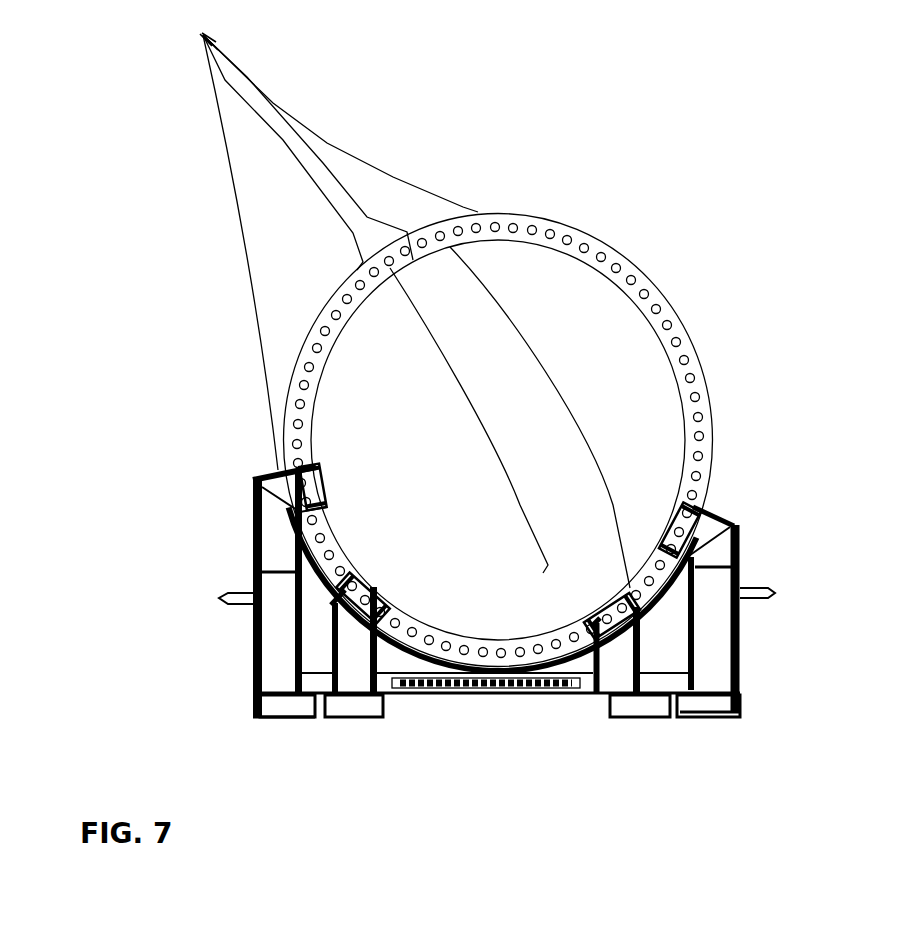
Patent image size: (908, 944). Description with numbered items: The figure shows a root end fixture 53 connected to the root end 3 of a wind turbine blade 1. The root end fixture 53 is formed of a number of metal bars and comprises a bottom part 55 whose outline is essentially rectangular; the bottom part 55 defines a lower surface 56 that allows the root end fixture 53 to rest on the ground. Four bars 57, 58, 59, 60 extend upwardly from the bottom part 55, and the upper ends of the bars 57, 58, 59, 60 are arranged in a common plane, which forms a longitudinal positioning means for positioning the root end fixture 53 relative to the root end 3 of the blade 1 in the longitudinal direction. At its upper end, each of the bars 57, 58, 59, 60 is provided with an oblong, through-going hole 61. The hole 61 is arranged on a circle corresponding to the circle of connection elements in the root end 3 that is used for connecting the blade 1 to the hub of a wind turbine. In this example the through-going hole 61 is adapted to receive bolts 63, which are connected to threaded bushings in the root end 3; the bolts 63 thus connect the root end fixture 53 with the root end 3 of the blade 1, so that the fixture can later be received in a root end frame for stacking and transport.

The blade 1 is at (613, 240).
The root end 3 is at (620, 324).
The root end fixture 53 is at (783, 617).
The bottom part 55 is at (745, 710).
The lower surface 56 is at (643, 712).
The bar 57 is at (270, 650).
The bar 58 is at (358, 690).
The bar 59 is at (610, 675).
The bar 60 is at (720, 550).
The through-going hole 61 is at (268, 478).
The bolt 63 is at (605, 617).